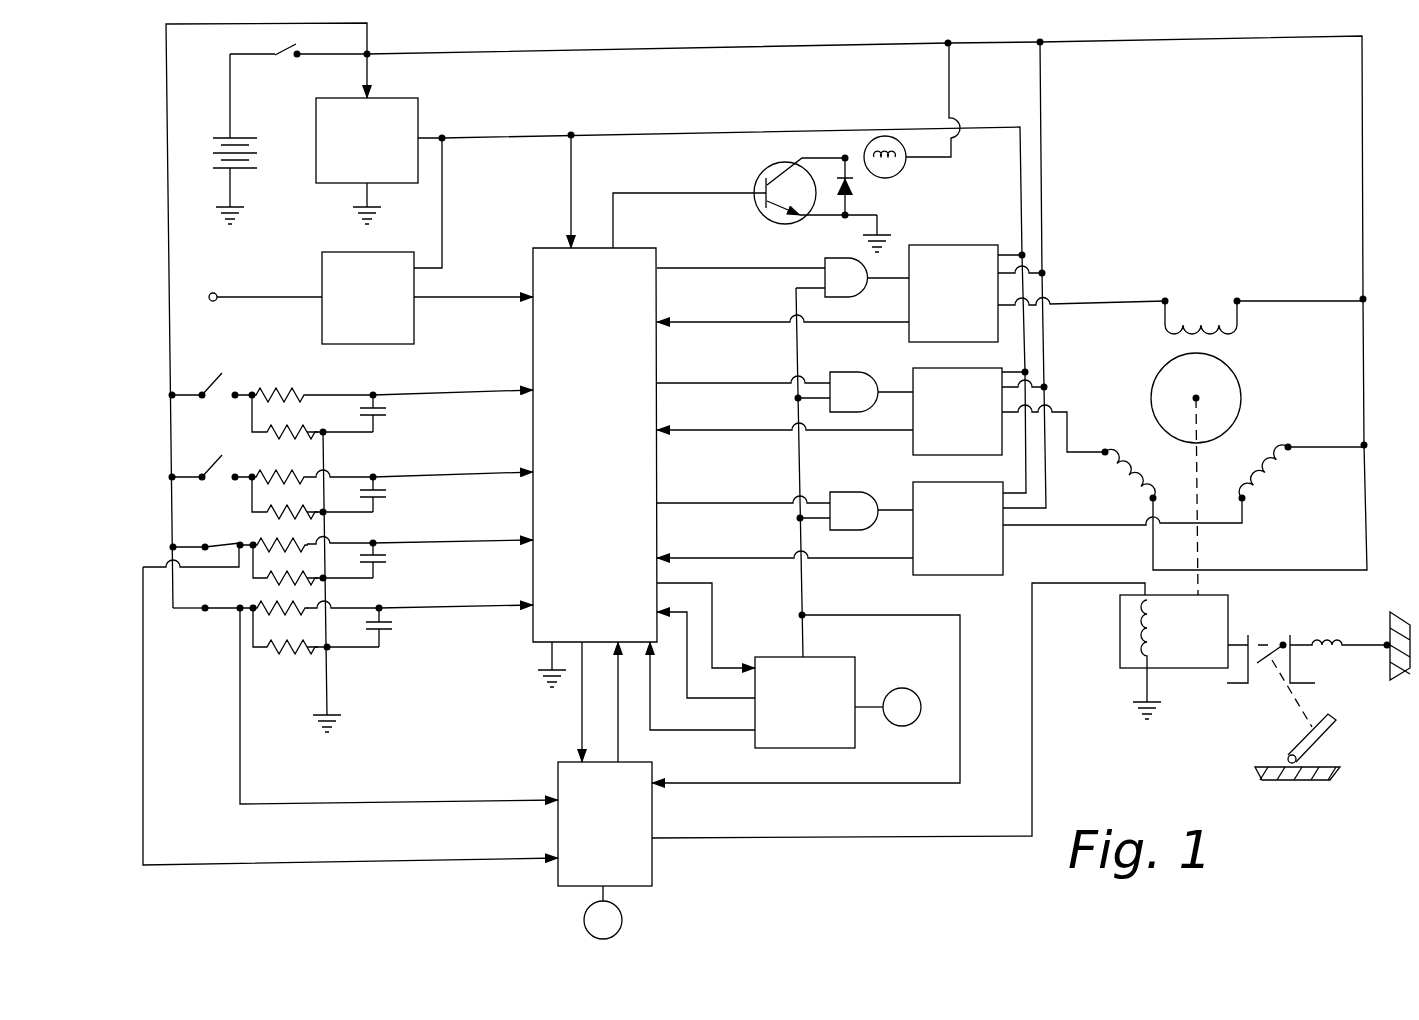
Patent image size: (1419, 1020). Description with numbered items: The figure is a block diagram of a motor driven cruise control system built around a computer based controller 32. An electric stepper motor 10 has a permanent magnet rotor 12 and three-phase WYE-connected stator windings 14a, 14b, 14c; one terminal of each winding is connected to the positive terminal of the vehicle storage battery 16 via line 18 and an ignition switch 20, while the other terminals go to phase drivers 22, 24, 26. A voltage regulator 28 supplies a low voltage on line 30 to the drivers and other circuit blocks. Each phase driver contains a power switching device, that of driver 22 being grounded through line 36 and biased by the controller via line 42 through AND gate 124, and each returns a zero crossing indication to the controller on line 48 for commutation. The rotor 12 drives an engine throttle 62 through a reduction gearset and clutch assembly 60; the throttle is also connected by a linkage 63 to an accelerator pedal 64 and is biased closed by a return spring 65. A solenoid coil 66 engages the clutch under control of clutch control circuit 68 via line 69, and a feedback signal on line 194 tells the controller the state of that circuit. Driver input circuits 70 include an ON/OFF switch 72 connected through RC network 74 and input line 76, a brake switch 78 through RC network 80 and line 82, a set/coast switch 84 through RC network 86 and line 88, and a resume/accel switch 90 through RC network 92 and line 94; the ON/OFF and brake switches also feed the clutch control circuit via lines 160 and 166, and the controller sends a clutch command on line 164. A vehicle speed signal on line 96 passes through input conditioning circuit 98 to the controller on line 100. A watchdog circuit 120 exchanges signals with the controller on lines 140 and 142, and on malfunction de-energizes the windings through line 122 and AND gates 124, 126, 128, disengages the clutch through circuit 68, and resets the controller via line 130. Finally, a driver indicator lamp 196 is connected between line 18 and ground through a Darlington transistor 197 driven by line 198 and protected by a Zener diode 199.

The electric stepper motor 10 is at (1243, 222).
The permanent magnet rotor 12 is at (1240, 378).
The stator winding 14a is at (1210, 322).
The stator winding 14b is at (1137, 432).
The stator winding 14c is at (1255, 435).
The vehicle storage battery 16 is at (245, 138).
The battery supply line 18 is at (825, 46).
The ignition switch 20 is at (276, 51).
The phase driver 22 is at (925, 247).
The phase driver 24 is at (905, 370).
The phase driver 26 is at (1003, 561).
The voltage regulator 28 is at (415, 100).
The regulated voltage line 30 is at (545, 135).
The computer based controller 32 is at (651, 487).
The ground line 36 is at (1115, 300).
The FET bias line 42 is at (725, 270).
The zero crossing indication line 48 is at (760, 325).
The reduction gearset and clutch assembly 60 is at (1188, 668).
The engine throttle 62 is at (1258, 666).
The linkage 63 is at (1278, 737).
The accelerator pedal 64 is at (1305, 753).
The return spring 65 is at (1345, 655).
The solenoid coil 66 is at (1130, 627).
The clutch control circuit 68 is at (650, 876).
The coil energization line 69 is at (1033, 751).
The driver input circuits 70 is at (213, 655).
The ON/OFF switch 72 is at (226, 612).
The RC network 74 is at (347, 598).
The input line 76 is at (468, 606).
The brake switch 78 is at (215, 545).
The RC network 80 is at (345, 535).
The input line 82 is at (475, 540).
The set/coast switch 84 is at (213, 468).
The RC network 86 is at (342, 468).
The input line 88 is at (435, 470).
The resume/accel switch 90 is at (213, 387).
The RC network 92 is at (314, 391).
The input line 94 is at (452, 386).
The vehicle speed signal line 96 is at (243, 297).
The input conditioning circuit 98 is at (330, 252).
The input line 100 is at (473, 290).
The watchdog circuit 120 is at (825, 748).
The watchdog output line 122 is at (802, 641).
The AND gate 124 is at (845, 258).
The AND gate 126 is at (862, 415).
The AND gate 128 is at (876, 491).
The reset line 130 is at (693, 733).
The controller output line 140 is at (715, 608).
The watchdog output line 142 is at (697, 652).
The ON/OFF input line 160 is at (375, 802).
The clutch command line 164 is at (560, 715).
The brake signal line 166 is at (330, 862).
The feedback line 194 is at (625, 745).
The driver indicator lamp 196 is at (900, 172).
The Darlington transistor 197 is at (757, 213).
The lamp control line 198 is at (627, 193).
The Zener diode 199 is at (872, 188).